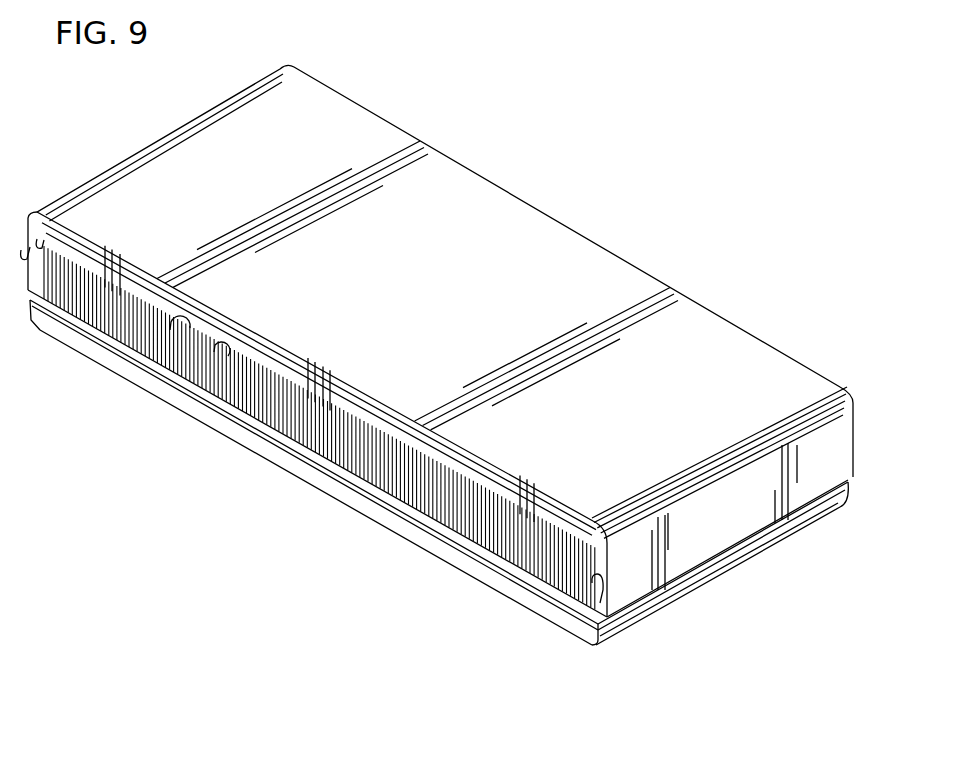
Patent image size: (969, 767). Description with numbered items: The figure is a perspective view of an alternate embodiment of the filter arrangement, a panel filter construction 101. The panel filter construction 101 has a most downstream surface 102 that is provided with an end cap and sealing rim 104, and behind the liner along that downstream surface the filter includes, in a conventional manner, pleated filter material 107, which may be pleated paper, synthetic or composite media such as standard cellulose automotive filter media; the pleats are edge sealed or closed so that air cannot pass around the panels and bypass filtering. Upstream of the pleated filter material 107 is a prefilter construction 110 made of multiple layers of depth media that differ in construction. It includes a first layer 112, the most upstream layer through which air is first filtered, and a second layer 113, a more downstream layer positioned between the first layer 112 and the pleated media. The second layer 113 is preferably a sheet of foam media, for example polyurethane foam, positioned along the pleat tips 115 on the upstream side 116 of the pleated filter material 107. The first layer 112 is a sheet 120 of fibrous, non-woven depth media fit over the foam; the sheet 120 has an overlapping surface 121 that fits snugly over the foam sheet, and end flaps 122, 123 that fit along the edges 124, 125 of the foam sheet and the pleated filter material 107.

The panel filter construction 101 is at (678, 212).
The most downstream surface 102 is at (453, 570).
The end cap and sealing rim 104 is at (613, 628).
The pleated filter material 107 is at (308, 427).
The prefilter construction 110 is at (713, 333).
The first layer of depth media 112 is at (488, 213).
The second layer of depth media 113 is at (373, 426).
The pleat tips 115 is at (228, 356).
The upstream side 116 is at (190, 328).
The sheet of fibrous media 120 is at (773, 373).
The overlapping surface 121 is at (403, 269).
The end flap 122 is at (708, 538).
The end flap 123 is at (21, 250).
The edge 124 is at (600, 603).
The edge 125 is at (37, 239).